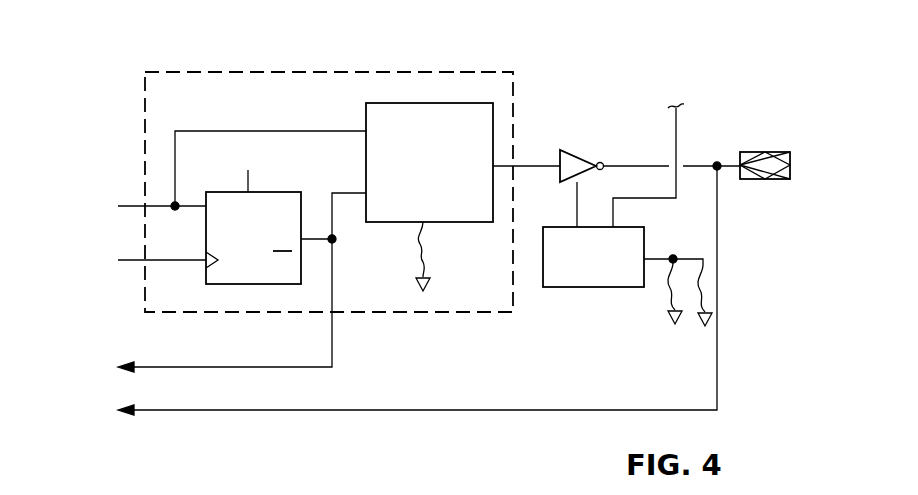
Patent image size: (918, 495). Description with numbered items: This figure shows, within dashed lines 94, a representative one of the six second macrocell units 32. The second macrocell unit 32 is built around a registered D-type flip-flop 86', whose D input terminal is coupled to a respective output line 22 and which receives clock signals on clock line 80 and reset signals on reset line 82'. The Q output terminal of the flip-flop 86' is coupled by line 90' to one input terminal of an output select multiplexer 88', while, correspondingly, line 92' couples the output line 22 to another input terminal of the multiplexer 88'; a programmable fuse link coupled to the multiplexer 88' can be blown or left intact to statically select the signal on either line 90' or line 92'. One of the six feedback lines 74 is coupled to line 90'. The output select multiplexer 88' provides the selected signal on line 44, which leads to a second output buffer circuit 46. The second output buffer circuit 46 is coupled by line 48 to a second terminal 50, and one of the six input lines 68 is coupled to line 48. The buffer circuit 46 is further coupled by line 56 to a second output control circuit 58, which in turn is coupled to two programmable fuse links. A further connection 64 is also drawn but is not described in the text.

The output line 22 is at (126, 205).
The second macrocell unit 32 is at (256, 55).
The line 44 is at (538, 165).
The second output buffer circuit 46 is at (579, 156).
The line 48 is at (630, 165).
The second terminal 50 is at (758, 152).
The line 56 is at (576, 206).
The second output control circuit 58 is at (602, 288).
The feedback line 64 is at (661, 197).
The input line 68 is at (193, 412).
The feedback line 74 is at (168, 366).
The clock line 80 is at (128, 259).
The reset line 82' is at (261, 166).
The registered flip-flop 86' is at (253, 271).
The output select multiplexer 88' is at (393, 192).
The line 90' is at (346, 237).
The line 92′ is at (225, 131).
The dashed lines 94 is at (440, 72).